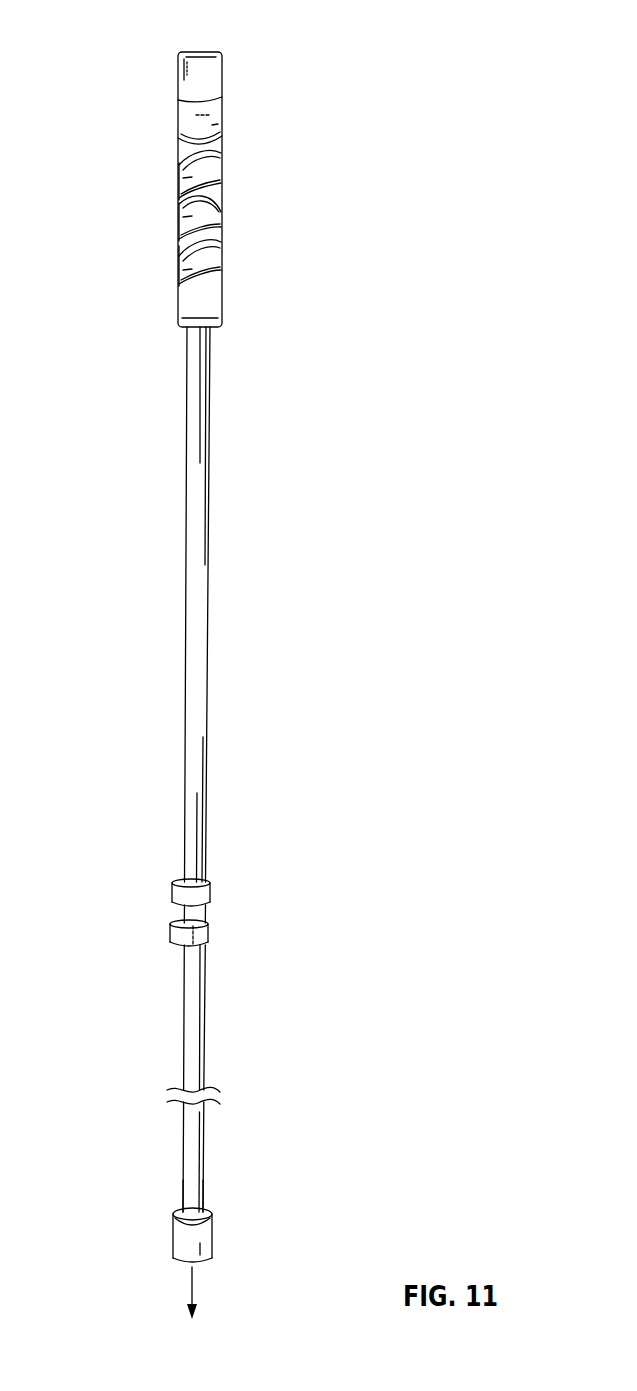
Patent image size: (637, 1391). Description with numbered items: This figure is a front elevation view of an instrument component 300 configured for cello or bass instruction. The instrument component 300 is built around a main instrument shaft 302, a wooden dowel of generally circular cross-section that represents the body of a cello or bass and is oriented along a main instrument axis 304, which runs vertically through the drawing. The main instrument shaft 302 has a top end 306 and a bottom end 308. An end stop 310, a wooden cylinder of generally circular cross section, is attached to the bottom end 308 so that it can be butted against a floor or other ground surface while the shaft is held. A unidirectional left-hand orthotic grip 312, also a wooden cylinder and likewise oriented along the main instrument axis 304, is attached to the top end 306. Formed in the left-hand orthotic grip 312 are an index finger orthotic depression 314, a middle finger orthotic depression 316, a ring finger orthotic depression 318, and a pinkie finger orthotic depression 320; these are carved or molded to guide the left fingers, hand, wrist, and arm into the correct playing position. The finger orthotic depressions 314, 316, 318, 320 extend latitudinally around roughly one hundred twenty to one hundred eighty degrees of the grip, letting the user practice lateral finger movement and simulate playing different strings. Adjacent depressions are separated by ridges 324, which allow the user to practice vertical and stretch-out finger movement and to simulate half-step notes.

The instrument component 300 is at (133, 38).
The main instrument shaft 302 is at (208, 595).
The main instrument axis 304 is at (193, 1285).
The top end 306 is at (221, 340).
The bottom end 308 is at (214, 1197).
The end stop 310 is at (213, 1232).
The unidirectional left-hand orthotic grip 312 is at (222, 57).
The index finger orthotic depression 314 is at (222, 130).
The middle finger orthotic depression 316 is at (222, 178).
The ring finger orthotic depression 318 is at (222, 218).
The pinkie finger orthotic depression 320 is at (222, 260).
The ridges 324 is at (182, 152).